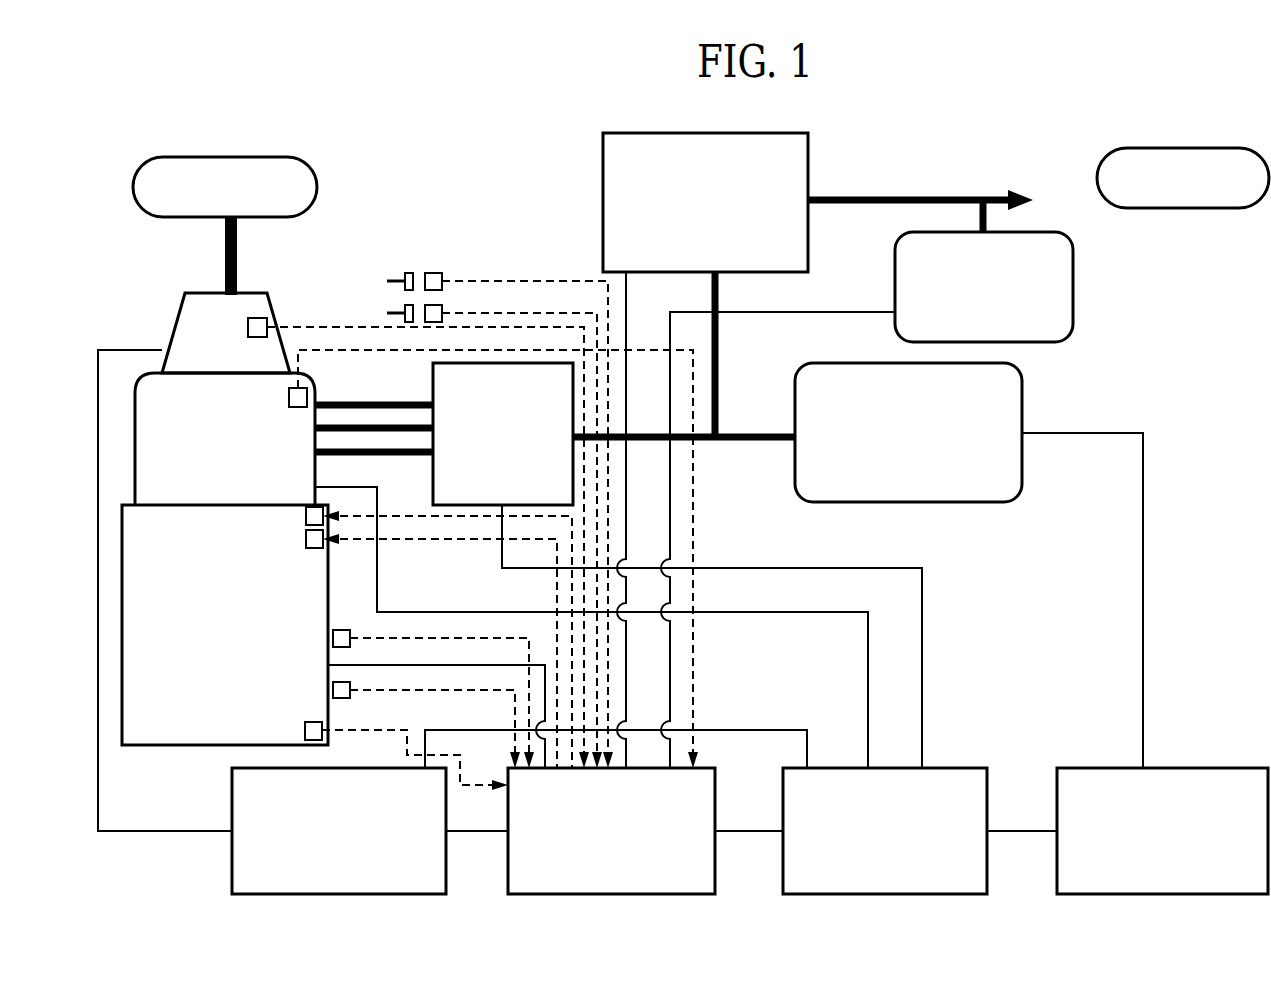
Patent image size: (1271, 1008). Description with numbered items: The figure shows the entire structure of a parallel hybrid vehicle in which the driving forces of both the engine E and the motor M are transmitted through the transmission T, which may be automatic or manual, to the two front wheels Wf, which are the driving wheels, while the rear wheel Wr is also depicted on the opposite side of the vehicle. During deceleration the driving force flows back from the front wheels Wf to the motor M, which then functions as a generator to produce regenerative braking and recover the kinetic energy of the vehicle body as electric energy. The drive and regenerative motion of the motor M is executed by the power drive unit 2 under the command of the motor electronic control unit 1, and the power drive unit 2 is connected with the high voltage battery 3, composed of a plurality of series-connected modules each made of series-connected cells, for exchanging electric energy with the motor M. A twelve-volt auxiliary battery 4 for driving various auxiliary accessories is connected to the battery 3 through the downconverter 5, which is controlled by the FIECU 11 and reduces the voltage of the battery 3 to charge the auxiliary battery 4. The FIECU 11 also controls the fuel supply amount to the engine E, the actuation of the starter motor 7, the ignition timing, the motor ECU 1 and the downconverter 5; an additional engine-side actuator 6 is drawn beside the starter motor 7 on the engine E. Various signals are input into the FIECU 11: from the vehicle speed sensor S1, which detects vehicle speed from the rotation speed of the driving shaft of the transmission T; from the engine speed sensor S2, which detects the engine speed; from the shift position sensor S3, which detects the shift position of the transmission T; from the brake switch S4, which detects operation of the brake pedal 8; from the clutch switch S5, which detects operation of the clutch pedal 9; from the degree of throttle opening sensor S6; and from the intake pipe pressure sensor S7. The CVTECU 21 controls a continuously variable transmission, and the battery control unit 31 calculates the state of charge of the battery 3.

The front wheel Wf is at (262, 157).
The rear wheel Wr is at (1228, 208).
The transmission T is at (216, 349).
The motor M is at (215, 447).
The engine E is at (216, 629).
The motor electronic control unit 1 is at (877, 847).
The power drive unit 2 is at (492, 448).
The battery 3 is at (902, 444).
The auxiliary battery 4 is at (973, 299).
The downconverter 5 is at (690, 215).
The throttle actuator 6 is at (306, 512).
The starter motor 7 is at (306, 540).
The brake pedal 8 is at (406, 273).
The clutch pedal 9 is at (405, 313).
The FIECU 11 is at (599, 847).
The CVTECU 21 is at (320, 847).
The battery control unit 31 is at (1140, 847).
The vehicle speed sensor S1 is at (267, 357).
The engine speed sensor S2 is at (305, 727).
The shift position sensor S3 is at (258, 318).
The brake switch S4 is at (440, 273).
The clutch switch S5 is at (442, 313).
The degree of throttle opening sensor S6 is at (345, 698).
The intake pipe pressure sensor S7 is at (341, 630).